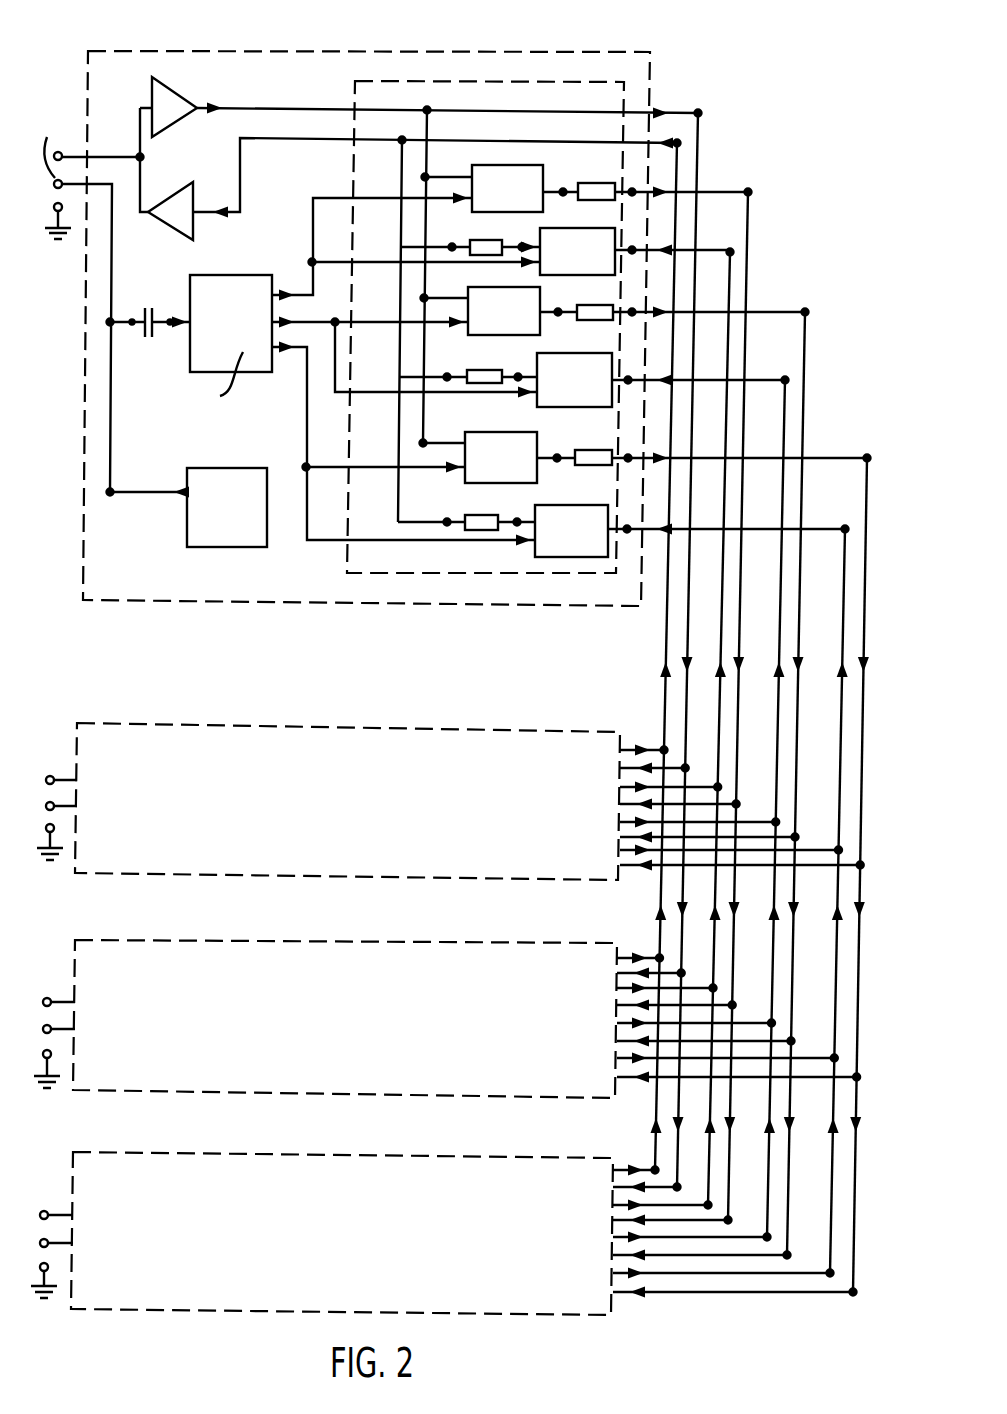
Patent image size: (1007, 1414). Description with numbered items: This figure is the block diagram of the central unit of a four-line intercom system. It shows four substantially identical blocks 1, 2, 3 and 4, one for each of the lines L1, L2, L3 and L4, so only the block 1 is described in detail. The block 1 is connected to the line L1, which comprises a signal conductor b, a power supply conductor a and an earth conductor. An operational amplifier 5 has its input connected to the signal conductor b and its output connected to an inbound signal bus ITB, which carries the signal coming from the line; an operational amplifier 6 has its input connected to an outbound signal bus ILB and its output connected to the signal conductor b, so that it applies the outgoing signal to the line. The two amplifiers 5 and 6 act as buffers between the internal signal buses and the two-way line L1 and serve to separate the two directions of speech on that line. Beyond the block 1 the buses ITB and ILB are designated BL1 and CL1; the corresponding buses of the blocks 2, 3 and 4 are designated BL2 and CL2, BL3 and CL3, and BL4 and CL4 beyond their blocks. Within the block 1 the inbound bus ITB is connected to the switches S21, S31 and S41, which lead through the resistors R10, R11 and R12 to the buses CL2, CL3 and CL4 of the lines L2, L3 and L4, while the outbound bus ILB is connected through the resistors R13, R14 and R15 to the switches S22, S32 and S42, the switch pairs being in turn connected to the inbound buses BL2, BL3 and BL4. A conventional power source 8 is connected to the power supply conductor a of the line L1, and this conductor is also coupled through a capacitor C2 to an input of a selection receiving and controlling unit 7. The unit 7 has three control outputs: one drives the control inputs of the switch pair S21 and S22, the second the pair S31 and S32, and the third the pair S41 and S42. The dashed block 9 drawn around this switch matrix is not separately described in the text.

The block 1 is at (327, 51).
The block 2 is at (307, 724).
The block 3 is at (296, 940).
The block 4 is at (302, 1153).
The operational amplifier 5 is at (180, 94).
The operational amplifier 6 is at (174, 190).
The selection receiving and controlling unit 7 is at (199, 276).
The power source 8 is at (193, 534).
The switching unit 9 is at (500, 80).
The line L1 is at (92, 287).
The line L2 is at (57, 803).
The line L3 is at (54, 1027).
The line L4 is at (52, 1238).
The inbound signal bus ITB is at (316, 108).
The outbound signal bus ILB is at (316, 140).
The capacitor C2 is at (149, 344).
The resistor R10 is at (590, 183).
The resistor R11 is at (593, 305).
The resistor R12 is at (592, 450).
The resistor R13 is at (482, 240).
The resistor R14 is at (483, 370).
The resistor R15 is at (482, 515).
The switch S21 is at (507, 188).
The switch S22 is at (577, 251).
The switch S31 is at (504, 311).
The switch S32 is at (574, 380).
The switch S41 is at (501, 457).
The switch S42 is at (571, 531).
The inbound signal bus BL1 is at (700, 146).
The inbound signal bus BL2 is at (748, 272).
The inbound signal bus BL3 is at (787, 398).
The inbound signal bus BL4 is at (845, 567).
The outbound signal bus CL1 is at (677, 172).
The outbound signal bus CL2 is at (730, 290).
The outbound signal bus CL3 is at (805, 431).
The outbound signal bus CL4 is at (867, 612).